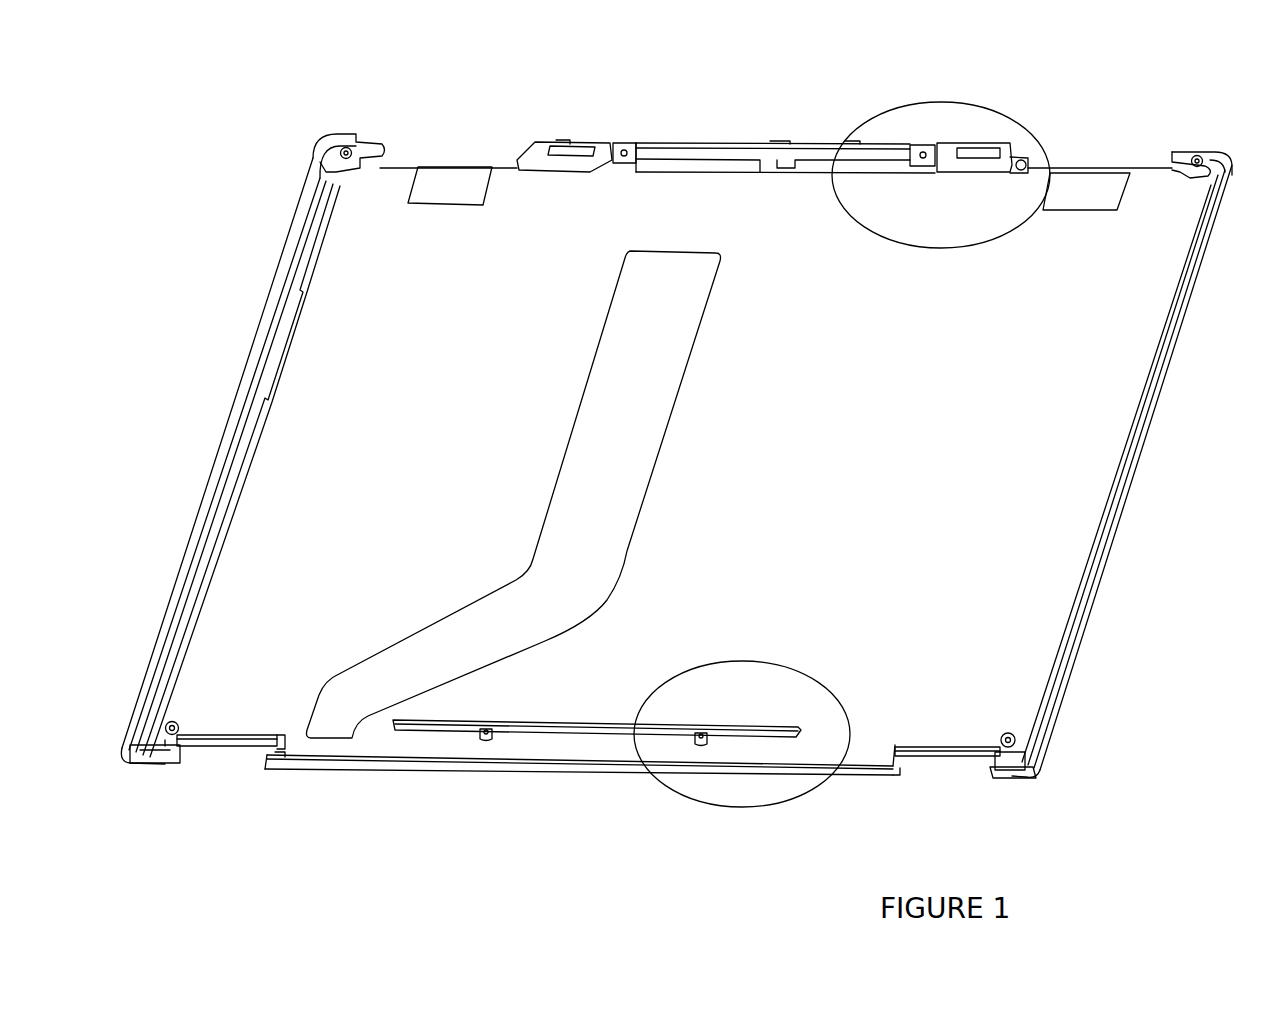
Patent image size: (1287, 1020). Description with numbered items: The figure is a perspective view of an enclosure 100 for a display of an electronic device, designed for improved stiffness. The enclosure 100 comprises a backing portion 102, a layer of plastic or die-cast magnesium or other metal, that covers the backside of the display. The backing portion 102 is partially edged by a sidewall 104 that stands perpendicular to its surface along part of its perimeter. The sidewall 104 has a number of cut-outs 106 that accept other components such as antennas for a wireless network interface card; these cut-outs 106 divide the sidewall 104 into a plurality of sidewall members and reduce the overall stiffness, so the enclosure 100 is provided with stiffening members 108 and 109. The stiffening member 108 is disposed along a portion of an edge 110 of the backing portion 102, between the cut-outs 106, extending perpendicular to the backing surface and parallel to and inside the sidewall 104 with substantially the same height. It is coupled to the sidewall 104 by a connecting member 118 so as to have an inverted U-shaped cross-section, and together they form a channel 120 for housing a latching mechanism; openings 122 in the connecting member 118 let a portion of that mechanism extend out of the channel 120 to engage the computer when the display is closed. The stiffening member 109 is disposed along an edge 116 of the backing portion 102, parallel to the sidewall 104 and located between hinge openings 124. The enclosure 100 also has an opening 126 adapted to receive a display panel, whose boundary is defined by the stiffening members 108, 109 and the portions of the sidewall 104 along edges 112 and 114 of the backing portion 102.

The enclosure 100 is at (1147, 112).
The backing portion 102 is at (1116, 418).
The sidewall 104 is at (815, 150).
The cut-outs 106 is at (455, 150).
The stiffening member 108 is at (810, 174).
The stiffening member 109 is at (600, 720).
The edge 110 is at (781, 156).
The edge 112 is at (1160, 478).
The edge 114 is at (206, 340).
The edge 116 is at (657, 786).
The connecting member 118 is at (880, 148).
The channel 120 is at (684, 150).
The openings 122 is at (560, 140).
The hinge openings 124 is at (233, 768).
The opening 126 is at (728, 444).